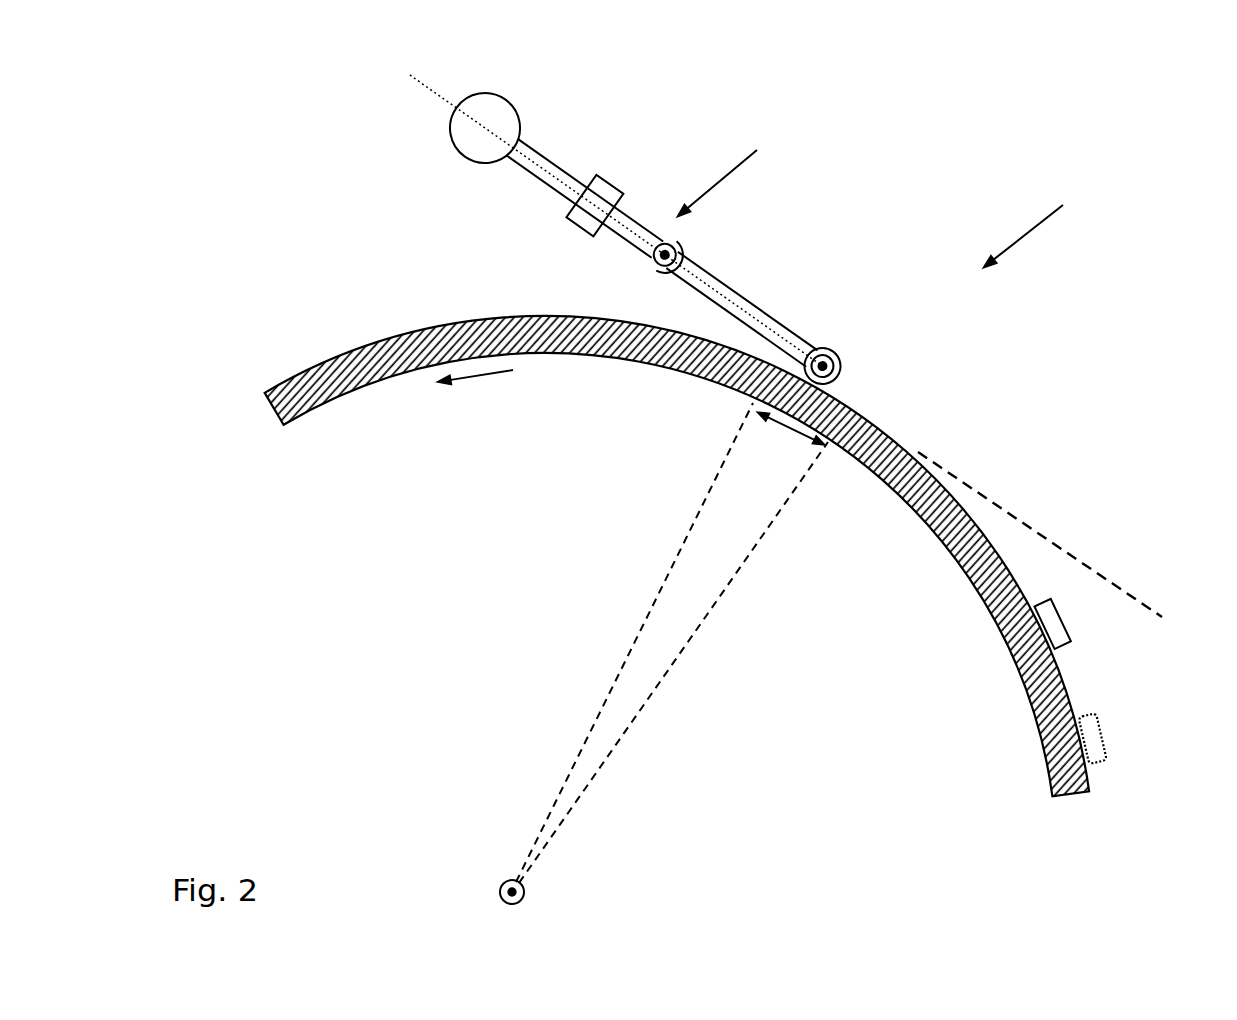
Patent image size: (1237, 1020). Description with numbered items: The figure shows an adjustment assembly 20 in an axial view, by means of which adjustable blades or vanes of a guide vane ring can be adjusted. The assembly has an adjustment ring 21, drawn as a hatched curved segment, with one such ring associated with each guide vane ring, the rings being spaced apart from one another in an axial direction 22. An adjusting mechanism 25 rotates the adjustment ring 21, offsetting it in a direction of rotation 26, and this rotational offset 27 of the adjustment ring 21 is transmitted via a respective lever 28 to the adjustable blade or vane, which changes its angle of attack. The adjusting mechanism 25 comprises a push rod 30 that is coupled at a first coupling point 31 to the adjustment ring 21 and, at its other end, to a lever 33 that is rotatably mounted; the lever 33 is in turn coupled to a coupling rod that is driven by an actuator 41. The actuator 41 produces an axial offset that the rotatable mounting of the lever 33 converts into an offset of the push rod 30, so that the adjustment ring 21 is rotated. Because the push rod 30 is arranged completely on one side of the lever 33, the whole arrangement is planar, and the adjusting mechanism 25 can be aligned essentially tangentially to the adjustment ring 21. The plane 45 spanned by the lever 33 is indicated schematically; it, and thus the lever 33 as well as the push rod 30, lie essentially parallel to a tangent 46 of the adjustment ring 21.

The adjustment assembly 20 is at (1042, 218).
The adjustment ring 21 is at (488, 345).
The axial direction 22 is at (525, 891).
The adjusting mechanism 25 is at (736, 166).
The direction of rotation 26 is at (485, 375).
The rotational offset 27 is at (788, 430).
The lever 28 is at (1058, 620).
The push rod 30 is at (758, 312).
The first coupling point 31 is at (862, 358).
The lever 33 is at (628, 222).
The actuator 41 is at (502, 122).
The plane 45 is at (638, 237).
The tangent 46 is at (1052, 540).